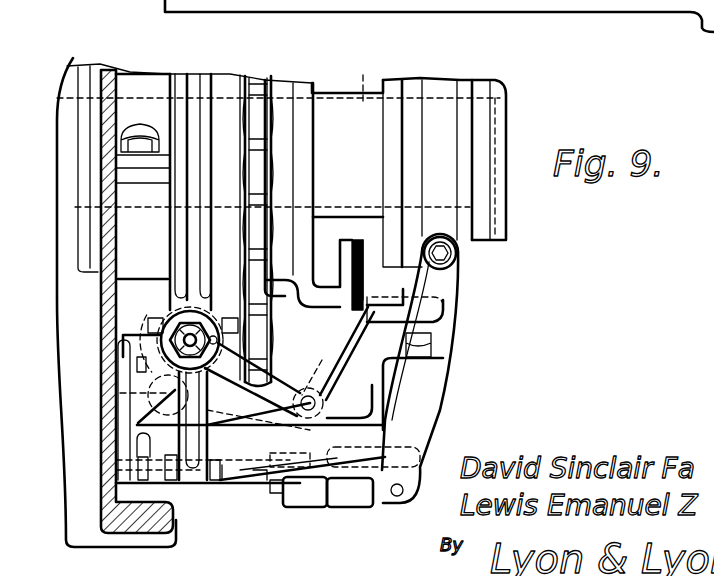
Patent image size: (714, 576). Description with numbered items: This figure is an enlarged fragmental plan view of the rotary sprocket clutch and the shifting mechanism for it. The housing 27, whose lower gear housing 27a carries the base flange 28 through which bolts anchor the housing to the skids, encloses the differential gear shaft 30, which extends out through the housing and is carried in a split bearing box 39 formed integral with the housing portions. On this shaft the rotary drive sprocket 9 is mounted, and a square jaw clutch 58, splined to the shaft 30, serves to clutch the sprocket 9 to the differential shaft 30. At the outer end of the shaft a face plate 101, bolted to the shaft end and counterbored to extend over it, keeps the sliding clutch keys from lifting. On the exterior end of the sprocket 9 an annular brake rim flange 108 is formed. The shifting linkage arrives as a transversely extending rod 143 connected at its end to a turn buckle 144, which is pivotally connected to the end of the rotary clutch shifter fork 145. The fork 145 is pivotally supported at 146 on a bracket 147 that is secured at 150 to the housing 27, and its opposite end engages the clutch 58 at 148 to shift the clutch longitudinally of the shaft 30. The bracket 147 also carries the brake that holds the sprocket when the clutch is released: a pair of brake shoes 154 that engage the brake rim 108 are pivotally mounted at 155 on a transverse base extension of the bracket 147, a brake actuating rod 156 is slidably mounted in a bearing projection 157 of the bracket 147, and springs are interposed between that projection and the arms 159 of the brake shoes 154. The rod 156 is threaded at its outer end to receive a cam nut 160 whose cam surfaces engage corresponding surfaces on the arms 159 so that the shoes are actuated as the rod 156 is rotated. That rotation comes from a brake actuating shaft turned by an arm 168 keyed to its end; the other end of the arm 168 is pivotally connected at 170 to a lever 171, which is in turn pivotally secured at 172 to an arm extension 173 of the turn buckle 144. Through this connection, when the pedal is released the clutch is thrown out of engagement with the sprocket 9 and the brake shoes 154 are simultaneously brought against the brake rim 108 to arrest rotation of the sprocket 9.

The rotary drive sprocket 9 is at (258, 133).
The housing 27 is at (96, 307).
The lower gear housing 27a is at (112, 70).
The base flange 28 is at (150, 530).
The differential gear shaft 30 is at (361, 80).
The bearing box 39 is at (130, 100).
The square jaw clutch 58 is at (392, 155).
The face plate 101 is at (506, 117).
The annular brake rim flange 108 is at (165, 80).
The transversely extending rod 143 is at (240, 480).
The turn buckle 144 is at (348, 506).
The rotary clutch shifter fork 145 is at (420, 421).
The pivot 146 is at (433, 346).
The bracket 147 is at (384, 385).
The clutch engagement 148 is at (455, 257).
The bracket securing means 150 is at (125, 362).
The brake shoes 154 is at (192, 82).
The brake shoe pivot 155 is at (225, 467).
The brake actuating rod 156 is at (183, 327).
The bearing projection 157 is at (253, 330).
The arms 159 is at (193, 238).
The cam nut 160 is at (207, 323).
The arm 168 is at (153, 363).
The pivotal connection 170 is at (118, 393).
The lever 171 is at (275, 385).
The pivot 172 is at (338, 353).
The arm extension 173 is at (318, 405).